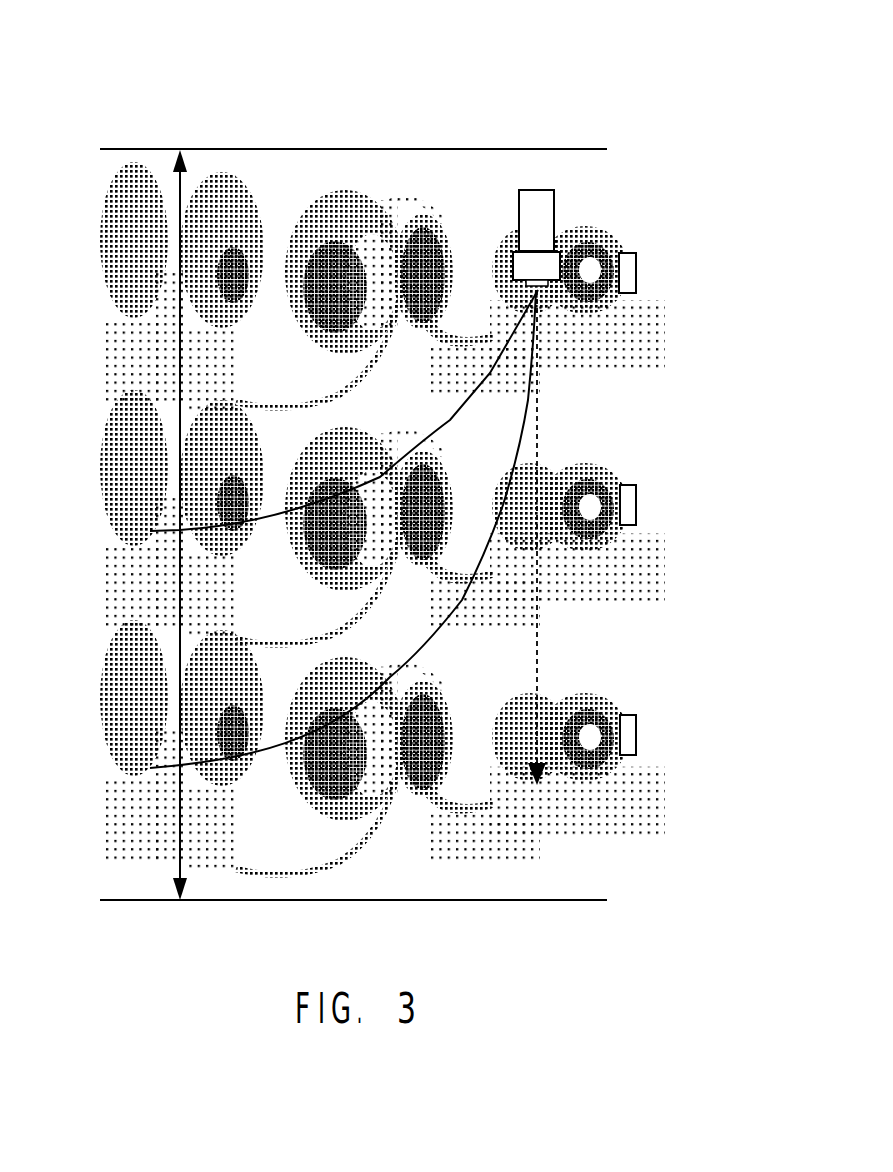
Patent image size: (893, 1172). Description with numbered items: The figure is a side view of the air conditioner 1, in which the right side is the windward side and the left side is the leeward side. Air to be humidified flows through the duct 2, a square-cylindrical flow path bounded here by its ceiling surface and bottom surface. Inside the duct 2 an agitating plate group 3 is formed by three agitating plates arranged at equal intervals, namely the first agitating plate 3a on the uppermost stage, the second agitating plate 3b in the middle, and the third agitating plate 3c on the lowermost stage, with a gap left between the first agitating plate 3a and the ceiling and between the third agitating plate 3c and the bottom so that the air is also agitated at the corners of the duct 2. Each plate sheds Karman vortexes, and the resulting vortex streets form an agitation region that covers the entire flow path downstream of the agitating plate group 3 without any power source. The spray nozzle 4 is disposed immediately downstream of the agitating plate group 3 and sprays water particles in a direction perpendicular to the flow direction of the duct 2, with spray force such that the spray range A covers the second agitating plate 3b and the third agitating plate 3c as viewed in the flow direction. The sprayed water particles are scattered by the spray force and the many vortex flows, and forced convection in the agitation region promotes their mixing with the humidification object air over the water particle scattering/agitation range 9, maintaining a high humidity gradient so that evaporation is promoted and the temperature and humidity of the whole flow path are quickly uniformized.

The air conditioner 1 is at (396, 454).
The duct 2 is at (380, 149).
The agitating plate group 3 is at (629, 231).
The first agitating plate 3a is at (636, 275).
The second agitating plate 3b is at (636, 501).
The third agitating plate 3c is at (636, 733).
The spray nozzle 4 is at (554, 203).
The water particle scattering/agitation range 9 is at (180, 414).
The spray range A is at (403, 628).